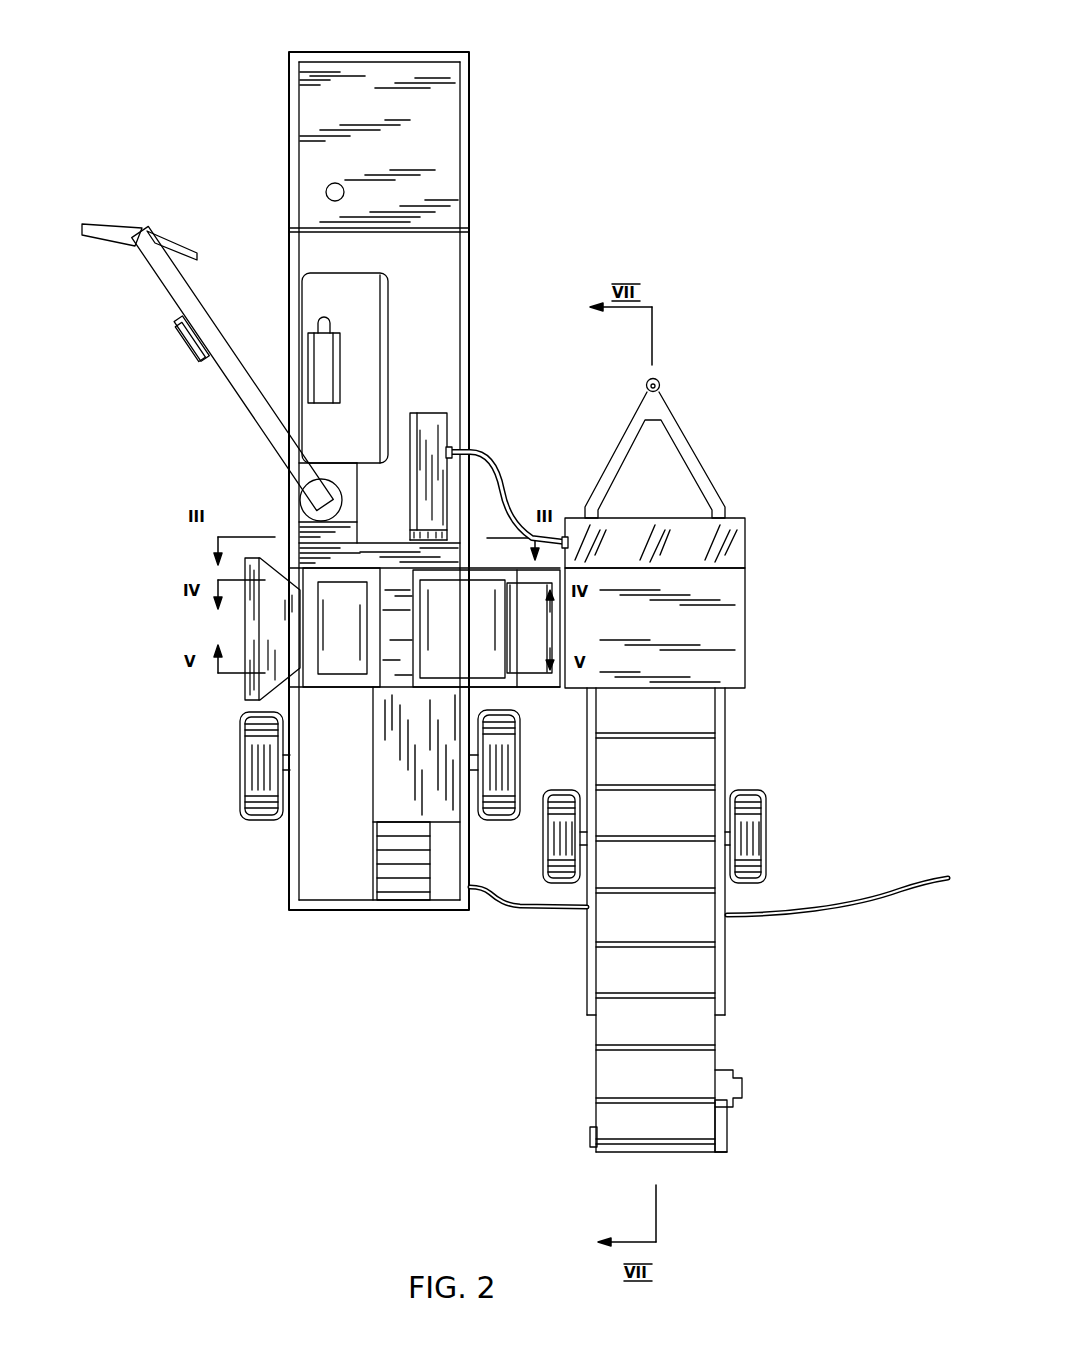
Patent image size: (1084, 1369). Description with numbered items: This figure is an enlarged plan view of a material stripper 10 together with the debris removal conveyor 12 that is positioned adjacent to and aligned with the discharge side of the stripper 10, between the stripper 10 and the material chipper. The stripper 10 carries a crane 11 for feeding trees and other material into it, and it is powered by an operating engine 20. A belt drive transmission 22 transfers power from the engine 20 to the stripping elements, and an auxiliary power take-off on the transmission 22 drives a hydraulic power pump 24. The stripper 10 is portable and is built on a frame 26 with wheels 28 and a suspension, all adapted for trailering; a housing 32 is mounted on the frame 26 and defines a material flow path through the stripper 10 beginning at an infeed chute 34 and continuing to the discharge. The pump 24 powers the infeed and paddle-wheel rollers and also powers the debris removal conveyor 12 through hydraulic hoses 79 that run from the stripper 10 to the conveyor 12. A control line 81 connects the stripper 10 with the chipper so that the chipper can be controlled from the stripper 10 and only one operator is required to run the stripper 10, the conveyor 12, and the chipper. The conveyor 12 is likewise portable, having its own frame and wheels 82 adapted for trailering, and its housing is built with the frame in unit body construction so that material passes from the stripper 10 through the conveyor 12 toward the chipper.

The material stripper 10 is at (210, 771).
The crane 11 is at (210, 367).
The debris removal conveyor 12 is at (760, 482).
The operating engine 20 is at (370, 292).
The belt drive transmission 22 is at (375, 553).
The hydraulic power pump 24 is at (424, 420).
The frame 26 is at (474, 284).
The wheels 28 is at (240, 812).
The housing 32 is at (356, 690).
The infeed chute 34 is at (292, 631).
The hydraulic hoses 79 is at (493, 463).
The control line 81 is at (828, 913).
The wheels 82 is at (764, 830).